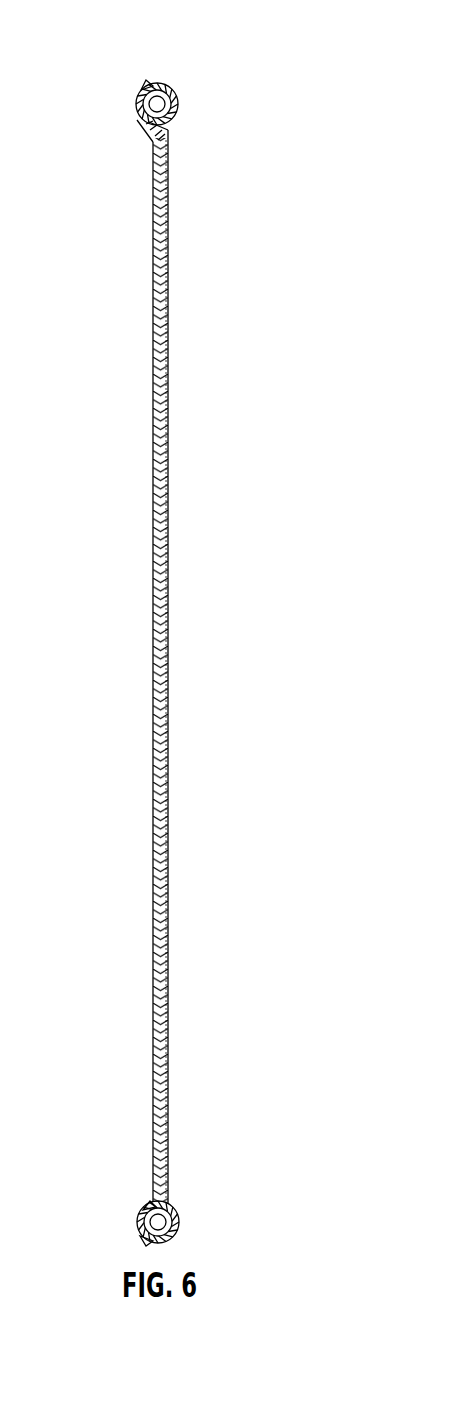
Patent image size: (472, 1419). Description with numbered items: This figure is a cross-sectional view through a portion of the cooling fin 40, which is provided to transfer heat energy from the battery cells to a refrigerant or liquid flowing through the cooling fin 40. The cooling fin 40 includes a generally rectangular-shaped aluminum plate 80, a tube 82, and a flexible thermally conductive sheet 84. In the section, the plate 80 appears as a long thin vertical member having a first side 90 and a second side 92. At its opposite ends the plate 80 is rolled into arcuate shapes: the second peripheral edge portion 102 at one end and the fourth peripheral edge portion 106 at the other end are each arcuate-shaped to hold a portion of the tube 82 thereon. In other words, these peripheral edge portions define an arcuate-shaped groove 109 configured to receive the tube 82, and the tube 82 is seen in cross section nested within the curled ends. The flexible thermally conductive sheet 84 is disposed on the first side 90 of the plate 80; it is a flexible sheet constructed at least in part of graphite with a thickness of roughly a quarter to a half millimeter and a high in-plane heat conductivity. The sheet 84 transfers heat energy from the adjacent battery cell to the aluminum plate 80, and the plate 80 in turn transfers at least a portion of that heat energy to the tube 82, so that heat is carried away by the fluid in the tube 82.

The cooling fin 40 is at (304, 103).
The generally rectangular-shaped aluminum plate 80 is at (150, 206).
The tube 82 is at (172, 91).
The flexible thermally conductive sheet 84 is at (172, 230).
The first side 90 is at (163, 130).
The second side 92 is at (152, 143).
The second peripheral edge portion 102 is at (137, 110).
The fourth peripheral edge portion 106 is at (143, 1240).
The arcuate-shaped groove 109 is at (157, 1202).